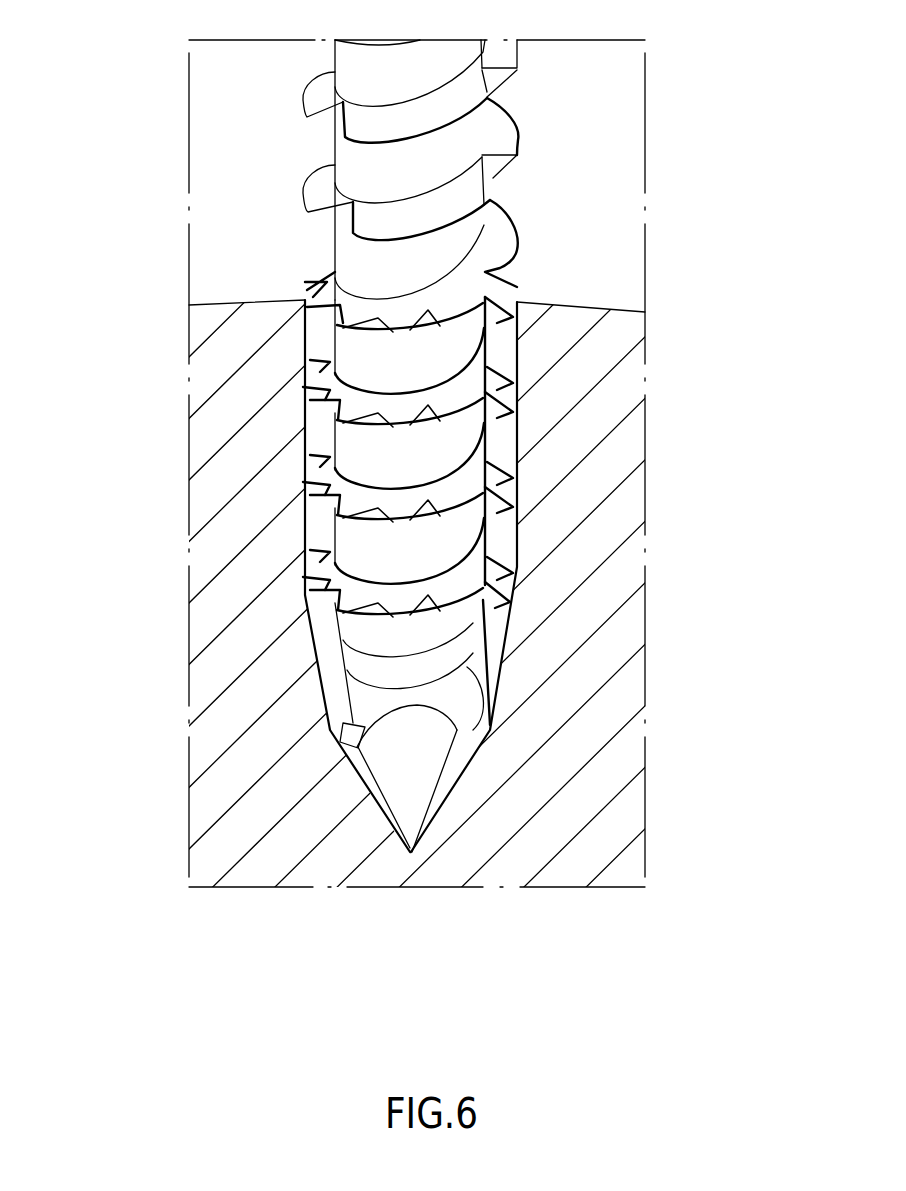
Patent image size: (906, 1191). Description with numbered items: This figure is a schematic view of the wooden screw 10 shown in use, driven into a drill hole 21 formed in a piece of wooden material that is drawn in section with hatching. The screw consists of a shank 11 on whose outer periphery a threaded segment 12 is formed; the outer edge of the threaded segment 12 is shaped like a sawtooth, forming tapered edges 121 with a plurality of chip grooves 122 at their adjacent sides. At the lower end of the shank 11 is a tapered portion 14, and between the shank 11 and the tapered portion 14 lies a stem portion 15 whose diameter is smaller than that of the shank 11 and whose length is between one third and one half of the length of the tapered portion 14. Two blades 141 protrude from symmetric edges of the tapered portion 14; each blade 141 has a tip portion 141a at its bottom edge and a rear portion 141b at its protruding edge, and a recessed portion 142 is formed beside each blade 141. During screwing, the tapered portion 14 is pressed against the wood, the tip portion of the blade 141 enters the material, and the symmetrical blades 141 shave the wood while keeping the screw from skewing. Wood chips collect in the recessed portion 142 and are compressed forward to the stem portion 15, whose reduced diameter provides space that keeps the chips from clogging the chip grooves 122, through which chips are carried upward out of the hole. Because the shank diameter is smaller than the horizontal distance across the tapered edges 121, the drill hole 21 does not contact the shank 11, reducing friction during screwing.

The wooden screw 10 is at (394, 534).
The shank 11 is at (445, 250).
The threaded segment 12 is at (401, 328).
The tapered edges 121 is at (322, 365).
The chip grooves 122 is at (318, 530).
The tapered portion 14 is at (295, 814).
The blades 141 is at (247, 866).
The tip portion 141a is at (408, 845).
The rear portion 141b is at (352, 742).
The recessed portion 142 is at (328, 730).
The stem portion 15 is at (448, 670).
The drill hole 21 is at (517, 508).